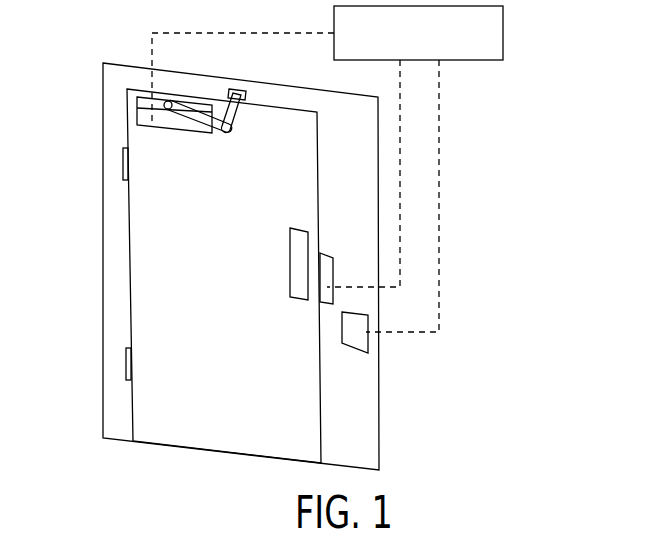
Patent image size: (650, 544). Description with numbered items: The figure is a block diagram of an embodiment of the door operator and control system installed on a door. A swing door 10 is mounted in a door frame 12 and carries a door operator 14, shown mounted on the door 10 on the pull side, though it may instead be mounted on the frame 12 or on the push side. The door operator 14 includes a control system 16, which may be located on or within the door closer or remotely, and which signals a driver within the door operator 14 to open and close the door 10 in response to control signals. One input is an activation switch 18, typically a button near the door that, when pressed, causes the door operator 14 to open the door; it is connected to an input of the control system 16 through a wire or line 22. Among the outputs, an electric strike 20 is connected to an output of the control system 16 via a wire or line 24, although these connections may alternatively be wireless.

The swing door 10 is at (194, 252).
The door frame 12 is at (345, 172).
The door operator 14 is at (187, 157).
The control system 16 is at (503, 33).
The activation switch 18 is at (363, 340).
The electric strike 20 is at (320, 255).
The wire or line 22 is at (439, 255).
The wire or line 24 is at (400, 85).